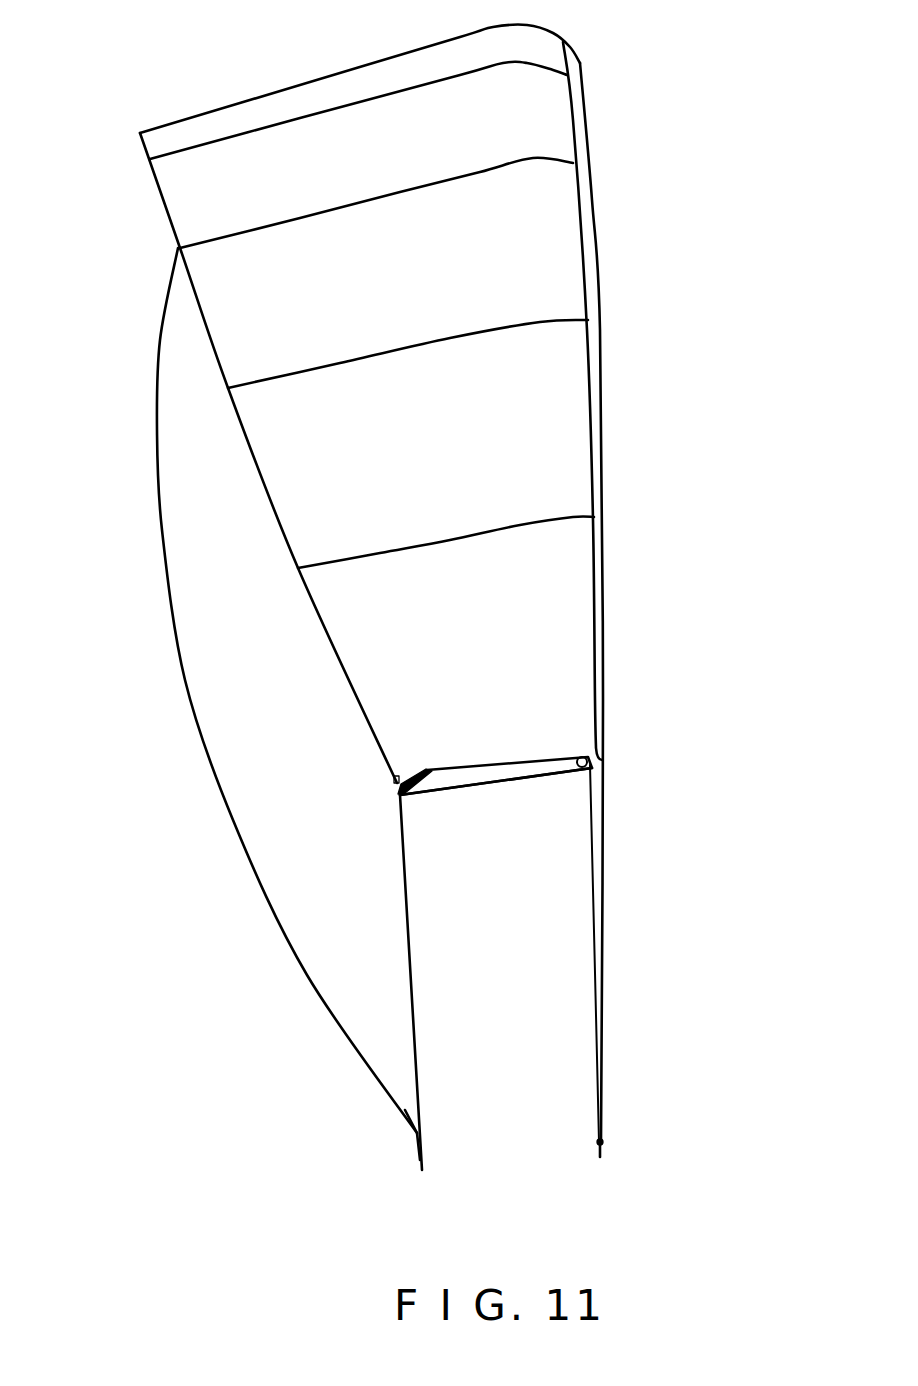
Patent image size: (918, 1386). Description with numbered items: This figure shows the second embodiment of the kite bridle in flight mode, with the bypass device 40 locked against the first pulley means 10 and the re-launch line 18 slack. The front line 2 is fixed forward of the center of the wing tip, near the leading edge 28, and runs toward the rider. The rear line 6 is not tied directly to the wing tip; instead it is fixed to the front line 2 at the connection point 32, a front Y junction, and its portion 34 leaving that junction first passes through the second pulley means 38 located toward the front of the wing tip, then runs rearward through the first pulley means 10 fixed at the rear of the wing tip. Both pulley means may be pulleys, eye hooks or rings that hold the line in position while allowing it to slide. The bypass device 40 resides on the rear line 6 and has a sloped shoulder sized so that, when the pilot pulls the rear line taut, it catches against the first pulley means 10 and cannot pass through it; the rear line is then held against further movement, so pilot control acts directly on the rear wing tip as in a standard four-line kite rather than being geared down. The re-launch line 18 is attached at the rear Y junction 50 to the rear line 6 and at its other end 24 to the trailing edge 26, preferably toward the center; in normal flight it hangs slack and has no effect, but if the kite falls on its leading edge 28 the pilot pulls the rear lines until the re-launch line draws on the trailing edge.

The front line 2 is at (601, 870).
The rear line 6 is at (517, 757).
The first pulley means 10 is at (403, 767).
The re-launch line 18 is at (307, 975).
The other end of re-launch line 24 is at (177, 250).
The trailing edge 26 is at (150, 160).
The leading edge 28 is at (582, 72).
The connection point 32 is at (600, 1142).
The portion of the rear line 34 is at (591, 830).
The second pulley means 38 is at (607, 745).
The bypass device 40 is at (430, 790).
The rear Y junction 50 is at (417, 1137).